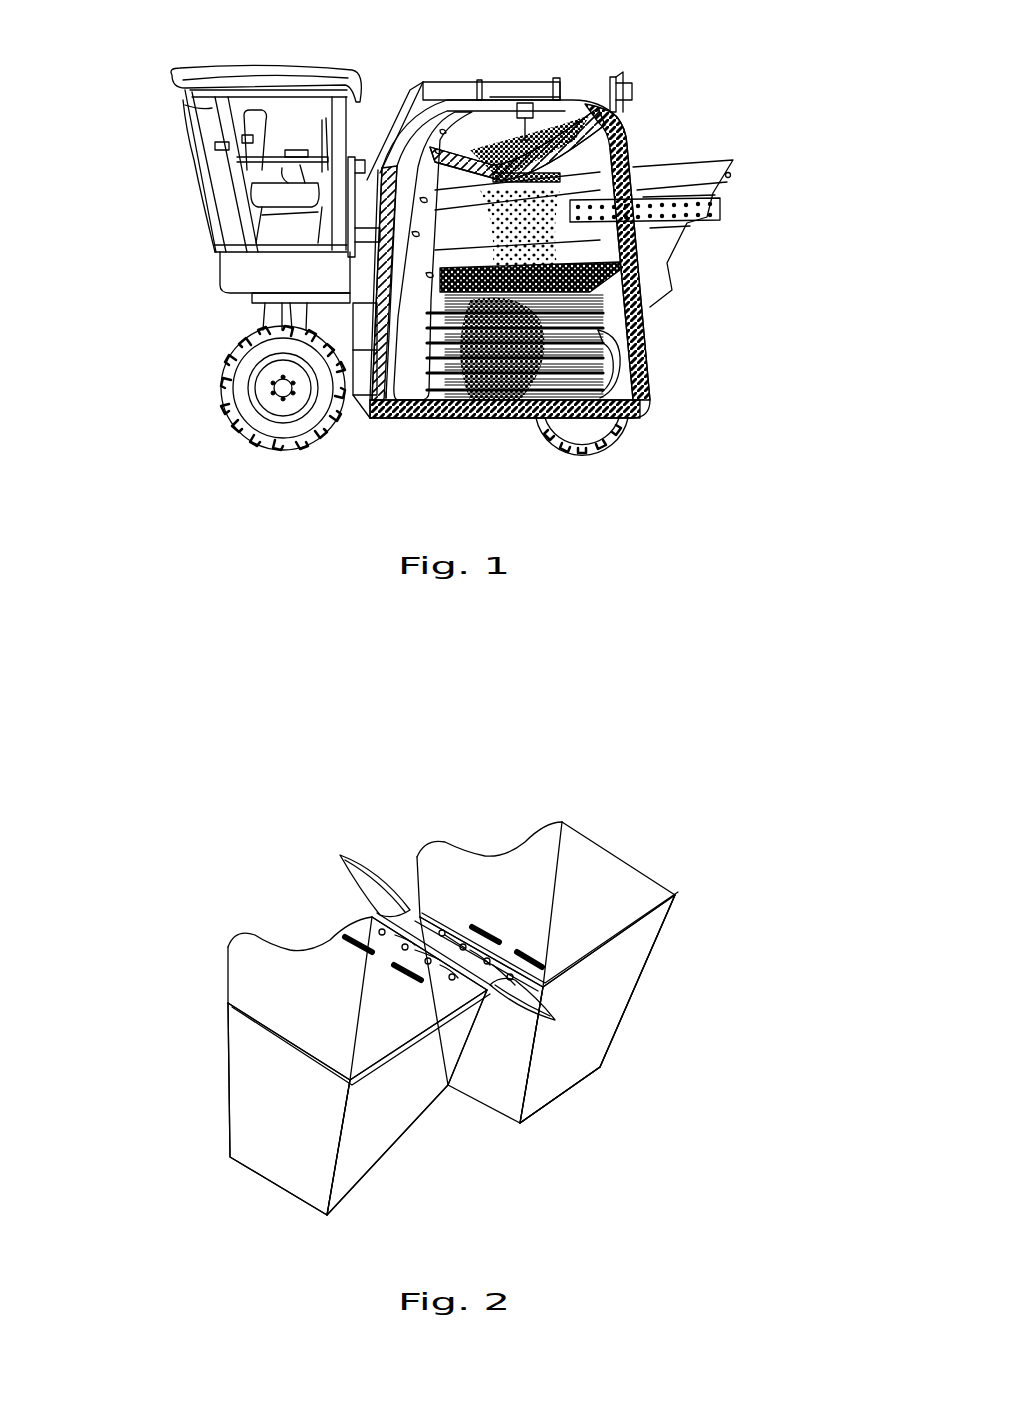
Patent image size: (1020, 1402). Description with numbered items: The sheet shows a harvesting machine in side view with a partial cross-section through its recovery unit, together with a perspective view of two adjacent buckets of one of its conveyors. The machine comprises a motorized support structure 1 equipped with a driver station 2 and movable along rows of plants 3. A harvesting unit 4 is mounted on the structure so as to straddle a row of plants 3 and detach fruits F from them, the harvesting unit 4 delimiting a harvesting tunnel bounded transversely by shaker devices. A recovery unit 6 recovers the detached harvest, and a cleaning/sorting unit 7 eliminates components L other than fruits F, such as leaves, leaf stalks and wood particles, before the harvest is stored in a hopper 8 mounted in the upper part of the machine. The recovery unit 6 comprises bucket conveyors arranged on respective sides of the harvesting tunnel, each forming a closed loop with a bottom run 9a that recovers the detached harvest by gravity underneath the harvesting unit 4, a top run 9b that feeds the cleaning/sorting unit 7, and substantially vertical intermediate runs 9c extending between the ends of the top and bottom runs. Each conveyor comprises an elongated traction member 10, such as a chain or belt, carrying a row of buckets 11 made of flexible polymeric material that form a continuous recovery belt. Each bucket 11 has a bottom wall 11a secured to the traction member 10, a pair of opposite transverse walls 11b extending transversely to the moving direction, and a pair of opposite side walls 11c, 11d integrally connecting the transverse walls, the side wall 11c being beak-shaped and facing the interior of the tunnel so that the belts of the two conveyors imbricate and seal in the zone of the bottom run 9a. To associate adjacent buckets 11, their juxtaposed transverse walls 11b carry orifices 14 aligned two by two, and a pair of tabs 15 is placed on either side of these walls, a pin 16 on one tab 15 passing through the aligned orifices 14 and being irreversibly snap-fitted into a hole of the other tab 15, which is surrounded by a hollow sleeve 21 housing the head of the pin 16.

In FIG. 1, the motorized support structure 1 is at (263, 275).
In FIG. 1, the driver station 2 is at (213, 139).
In FIG. 1, the rows of plants 3 is at (620, 422).
In FIG. 1, the harvesting unit 4 is at (612, 352).
In FIG. 1, the recovery unit 6 is at (622, 152).
In FIG. 1, the cleaning/sorting unit 7 is at (530, 150).
In FIG. 1, the hopper 8 is at (665, 262).
In FIG. 1, the bottom run 9a is at (478, 418).
In FIG. 1, the top run 9b is at (482, 155).
In FIG. 1, the intermediate runs 9c is at (390, 318).
In FIG. 1, the traction member 10 is at (440, 420).
In FIG. 1, the bucket 11 is at (377, 420).
In FIG. 2, the bucket 11 is at (630, 970).
In FIG. 2, the bottom wall 11a is at (567, 1103).
In FIG. 2, the transverse walls 11b is at (633, 890).
In FIG. 2, the beak-shaped side wall 11c is at (437, 855).
In FIG. 2, the side wall 11d is at (373, 1147).
In FIG. 2, the orifices 14 is at (562, 1028).
In FIG. 2, the tabs 15 is at (420, 985).
In FIG. 2, the pin 16 is at (480, 883).
In FIG. 2, the hollow sleeve 21 is at (350, 938).
In FIG. 1, the components other than fruits L is at (422, 120).
In FIG. 1, the fruits F is at (605, 232).